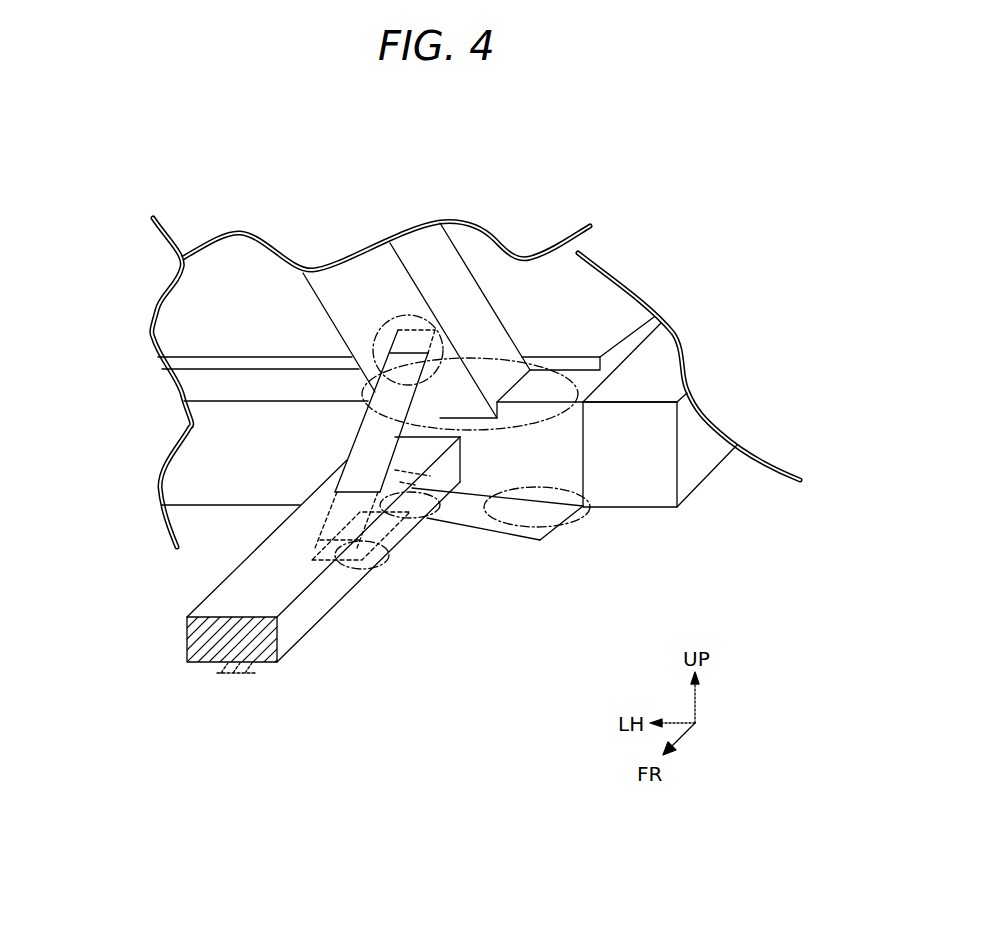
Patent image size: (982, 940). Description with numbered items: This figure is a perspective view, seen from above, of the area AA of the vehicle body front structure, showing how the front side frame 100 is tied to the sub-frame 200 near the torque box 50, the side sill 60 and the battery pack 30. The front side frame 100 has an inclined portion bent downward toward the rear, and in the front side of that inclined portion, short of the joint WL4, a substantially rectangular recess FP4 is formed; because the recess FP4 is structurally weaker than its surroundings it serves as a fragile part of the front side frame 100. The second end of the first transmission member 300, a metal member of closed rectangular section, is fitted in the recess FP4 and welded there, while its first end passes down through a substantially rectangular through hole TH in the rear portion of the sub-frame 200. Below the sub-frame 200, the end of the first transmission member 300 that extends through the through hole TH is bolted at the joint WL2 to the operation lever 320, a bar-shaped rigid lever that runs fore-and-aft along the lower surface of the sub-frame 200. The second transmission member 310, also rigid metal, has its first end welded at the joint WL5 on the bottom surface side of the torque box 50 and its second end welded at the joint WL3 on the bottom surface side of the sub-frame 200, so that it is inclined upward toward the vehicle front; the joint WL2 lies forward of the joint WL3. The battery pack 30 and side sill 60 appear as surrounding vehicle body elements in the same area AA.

The front side frame 100 is at (380, 290).
The battery pack 30 is at (600, 307).
The torque box 50 is at (230, 438).
The side sill 60 is at (693, 453).
The sub-frame 200 is at (212, 611).
The first transmission member 300 is at (375, 426).
The second transmission member 310 is at (473, 513).
The operation lever 320 is at (258, 672).
The through hole TH is at (313, 520).
The recess FP4 is at (405, 300).
The joint WL2 is at (372, 572).
The joint WL3 is at (404, 509).
The joint WL4 is at (596, 382).
The joint WL5 is at (598, 540).
The area AA is at (656, 180).